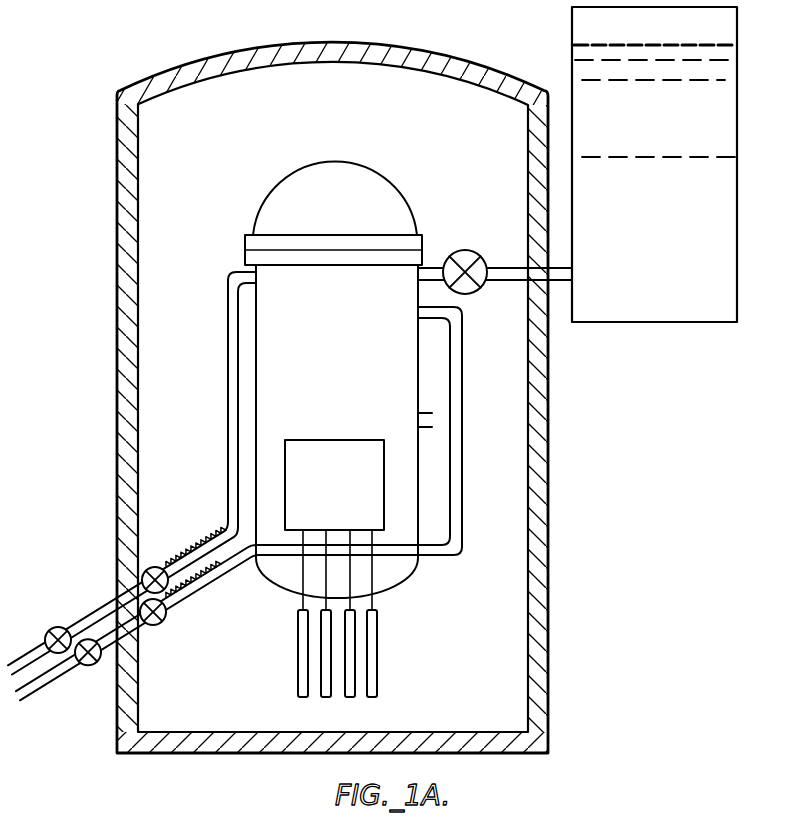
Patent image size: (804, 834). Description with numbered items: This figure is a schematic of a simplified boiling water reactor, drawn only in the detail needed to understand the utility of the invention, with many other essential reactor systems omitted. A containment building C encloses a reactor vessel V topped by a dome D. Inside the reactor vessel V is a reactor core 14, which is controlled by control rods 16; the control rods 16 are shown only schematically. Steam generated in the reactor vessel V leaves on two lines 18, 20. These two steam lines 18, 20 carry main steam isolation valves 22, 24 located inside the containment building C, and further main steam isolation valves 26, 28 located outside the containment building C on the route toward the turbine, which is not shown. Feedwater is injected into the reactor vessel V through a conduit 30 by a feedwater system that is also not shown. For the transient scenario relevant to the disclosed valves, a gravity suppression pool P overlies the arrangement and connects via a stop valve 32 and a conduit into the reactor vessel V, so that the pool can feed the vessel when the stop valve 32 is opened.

The containment building C is at (117, 340).
The gravity suppression pool P is at (722, 130).
The dome D is at (378, 174).
The reactor vessel V is at (340, 331).
The reactor core 14 is at (351, 481).
The control rods 16 is at (378, 661).
The line 18 is at (462, 441).
The line 20 is at (228, 410).
The main steam isolation valve 22 is at (163, 622).
The main steam isolation valve 24 is at (155, 567).
The main steam isolation valve 26 is at (92, 665).
The main steam isolation valve 28 is at (50, 632).
The conduit 30 is at (423, 413).
The stop valve 32 is at (462, 250).